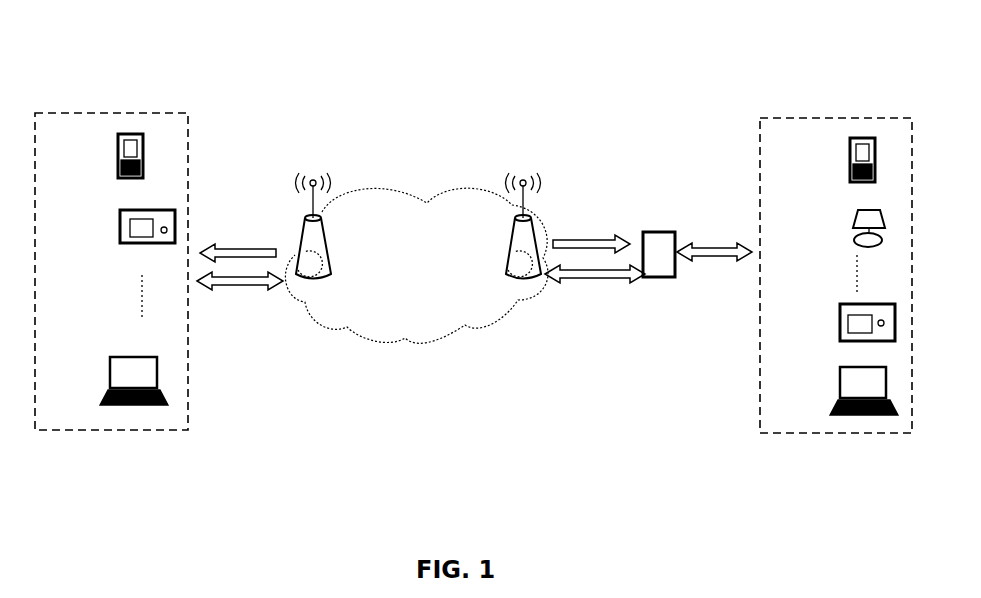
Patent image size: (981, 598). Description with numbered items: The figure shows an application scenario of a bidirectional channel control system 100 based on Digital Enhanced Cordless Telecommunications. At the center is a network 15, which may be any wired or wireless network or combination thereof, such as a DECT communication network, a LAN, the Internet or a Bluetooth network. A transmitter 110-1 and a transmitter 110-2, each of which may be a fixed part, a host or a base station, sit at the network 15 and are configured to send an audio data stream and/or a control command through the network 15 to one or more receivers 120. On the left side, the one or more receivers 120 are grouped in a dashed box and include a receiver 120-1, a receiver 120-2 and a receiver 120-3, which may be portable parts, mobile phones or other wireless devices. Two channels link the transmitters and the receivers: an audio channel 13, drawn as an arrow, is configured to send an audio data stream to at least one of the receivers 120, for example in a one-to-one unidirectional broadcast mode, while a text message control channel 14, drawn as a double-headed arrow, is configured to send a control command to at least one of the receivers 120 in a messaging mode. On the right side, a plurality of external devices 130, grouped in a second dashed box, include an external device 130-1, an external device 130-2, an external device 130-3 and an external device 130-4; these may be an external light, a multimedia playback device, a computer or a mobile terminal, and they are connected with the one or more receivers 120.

The bidirectional channel control system 100 is at (447, 41).
The transmitter 110-1 is at (343, 195).
The transmitter 110-2 is at (567, 204).
The receivers 120 is at (371, 245).
The receiver 120-1 is at (99, 154).
The receiver 120-2 is at (115, 217).
The receiver 120-3 is at (109, 375).
The external devices 130 is at (836, 249).
The external device 130-1 is at (831, 159).
The external device 130-2 is at (831, 221).
The external device 130-3 is at (838, 300).
The external device 130-4 is at (839, 381).
The audio channel 13 is at (415, 220).
The text message control channel 14 is at (473, 290).
The network 15 is at (416, 290).